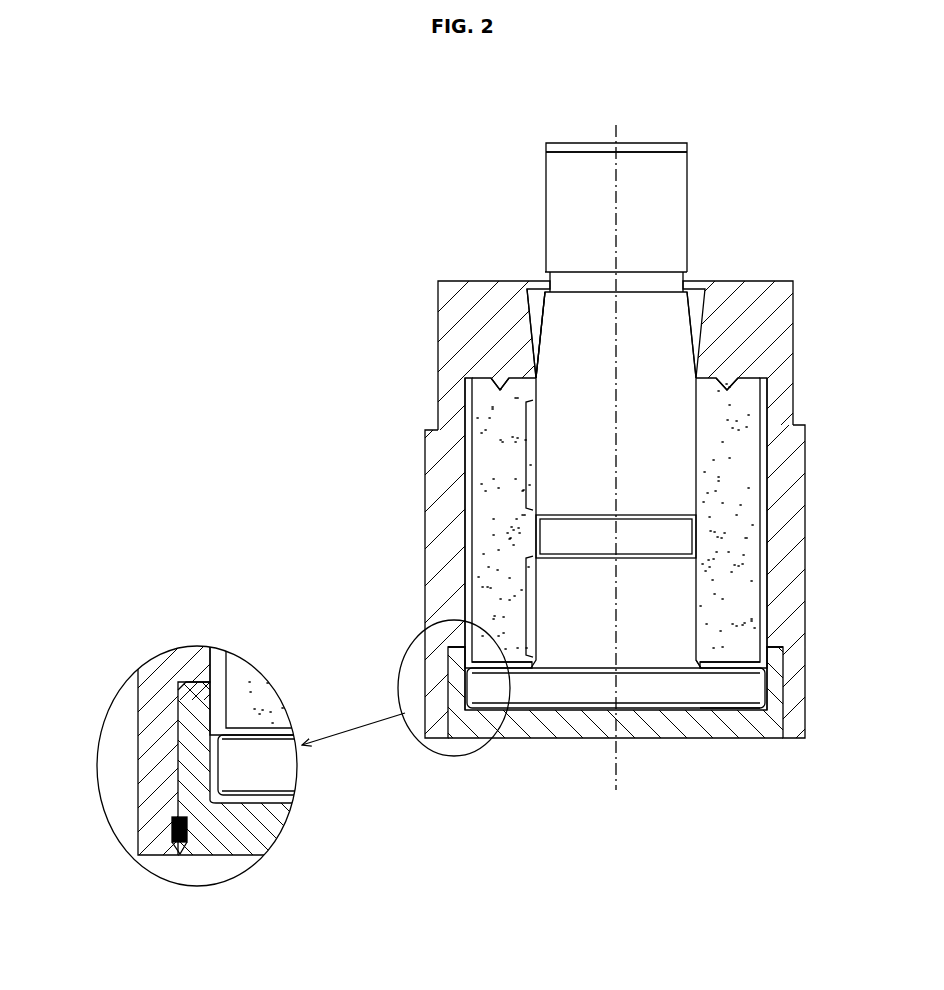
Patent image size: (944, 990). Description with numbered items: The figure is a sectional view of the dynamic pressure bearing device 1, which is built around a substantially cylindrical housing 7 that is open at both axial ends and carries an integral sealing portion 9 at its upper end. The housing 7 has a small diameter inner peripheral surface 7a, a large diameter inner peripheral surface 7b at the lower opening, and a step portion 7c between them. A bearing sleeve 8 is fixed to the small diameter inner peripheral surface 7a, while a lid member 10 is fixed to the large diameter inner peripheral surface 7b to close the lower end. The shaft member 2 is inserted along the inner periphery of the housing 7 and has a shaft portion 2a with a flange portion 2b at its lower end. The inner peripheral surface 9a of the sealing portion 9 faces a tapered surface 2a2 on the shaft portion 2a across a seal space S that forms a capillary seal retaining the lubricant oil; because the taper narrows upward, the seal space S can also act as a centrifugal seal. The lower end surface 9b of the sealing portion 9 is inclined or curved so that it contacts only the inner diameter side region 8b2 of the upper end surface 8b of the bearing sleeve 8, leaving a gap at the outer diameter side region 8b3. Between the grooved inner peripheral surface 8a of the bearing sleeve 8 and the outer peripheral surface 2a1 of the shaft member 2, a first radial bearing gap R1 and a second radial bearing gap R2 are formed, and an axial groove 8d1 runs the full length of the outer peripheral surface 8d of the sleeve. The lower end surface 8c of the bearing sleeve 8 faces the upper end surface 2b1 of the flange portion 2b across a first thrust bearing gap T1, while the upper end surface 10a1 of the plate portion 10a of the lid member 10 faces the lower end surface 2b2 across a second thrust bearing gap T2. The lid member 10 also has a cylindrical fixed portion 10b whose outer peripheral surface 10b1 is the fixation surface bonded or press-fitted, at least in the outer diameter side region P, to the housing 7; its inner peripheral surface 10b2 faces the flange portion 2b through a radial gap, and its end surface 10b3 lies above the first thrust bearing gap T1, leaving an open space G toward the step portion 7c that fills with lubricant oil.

The dynamic pressure bearing device 1 is at (808, 250).
The shaft member 2 is at (690, 195).
The shaft portion 2a is at (641, 167).
The outer peripheral surface 2a1 is at (700, 420).
The tapered surface 2a2 is at (690, 310).
The flange portion 2b is at (740, 690).
The upper end surface 2b1 is at (712, 652).
The lower end surface 2b2 is at (735, 712).
The housing 7 is at (455, 551).
The small diameter inner peripheral surface 7a is at (763, 542).
The large diameter inner peripheral surface 7b is at (440, 718).
The step portion 7c is at (174, 748).
The bearing sleeve 8 is at (735, 457).
The inner peripheral surface 8a is at (765, 494).
The upper end surface 8b is at (726, 378).
The inner diameter side region 8b2 is at (513, 377).
The outer diameter side region 8b3 is at (495, 378).
The lower end surface 8c is at (470, 668).
The outer peripheral surface 8d is at (767, 578).
The axial groove 8d1 is at (466, 450).
The sealing portion 9 is at (470, 293).
The inner peripheral surface 9a is at (538, 340).
The lower end surface 9b is at (497, 398).
The lid member 10 is at (738, 740).
The plate portion 10a is at (686, 738).
The upper end surface 10a1 is at (558, 700).
The fixed portion 10b is at (777, 700).
The outer peripheral surface 10b1 is at (237, 794).
The inner peripheral surface 10b2 is at (237, 768).
The end surface 10b3 is at (253, 687).
The seal space S is at (530, 275).
The first radial bearing gap R1 is at (512, 454).
The second radial bearing gap R2 is at (512, 605).
The first thrust bearing gap T1 is at (470, 655).
The second thrust bearing gap T2 is at (503, 733).
The open space G is at (176, 682).
The outer diameter side region P is at (178, 835).